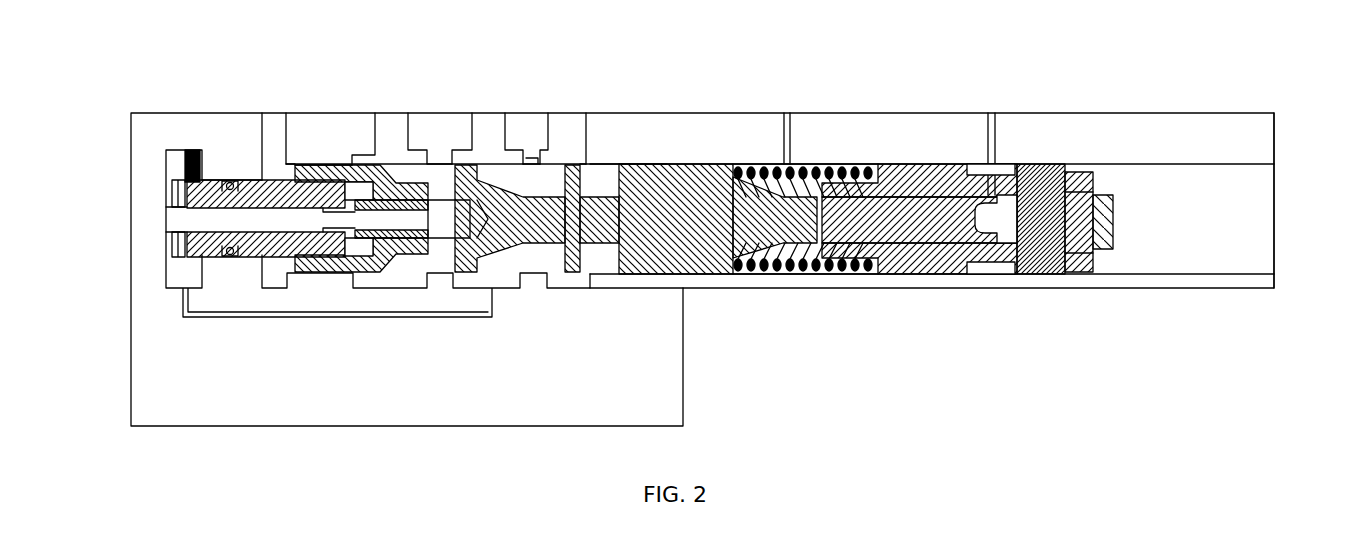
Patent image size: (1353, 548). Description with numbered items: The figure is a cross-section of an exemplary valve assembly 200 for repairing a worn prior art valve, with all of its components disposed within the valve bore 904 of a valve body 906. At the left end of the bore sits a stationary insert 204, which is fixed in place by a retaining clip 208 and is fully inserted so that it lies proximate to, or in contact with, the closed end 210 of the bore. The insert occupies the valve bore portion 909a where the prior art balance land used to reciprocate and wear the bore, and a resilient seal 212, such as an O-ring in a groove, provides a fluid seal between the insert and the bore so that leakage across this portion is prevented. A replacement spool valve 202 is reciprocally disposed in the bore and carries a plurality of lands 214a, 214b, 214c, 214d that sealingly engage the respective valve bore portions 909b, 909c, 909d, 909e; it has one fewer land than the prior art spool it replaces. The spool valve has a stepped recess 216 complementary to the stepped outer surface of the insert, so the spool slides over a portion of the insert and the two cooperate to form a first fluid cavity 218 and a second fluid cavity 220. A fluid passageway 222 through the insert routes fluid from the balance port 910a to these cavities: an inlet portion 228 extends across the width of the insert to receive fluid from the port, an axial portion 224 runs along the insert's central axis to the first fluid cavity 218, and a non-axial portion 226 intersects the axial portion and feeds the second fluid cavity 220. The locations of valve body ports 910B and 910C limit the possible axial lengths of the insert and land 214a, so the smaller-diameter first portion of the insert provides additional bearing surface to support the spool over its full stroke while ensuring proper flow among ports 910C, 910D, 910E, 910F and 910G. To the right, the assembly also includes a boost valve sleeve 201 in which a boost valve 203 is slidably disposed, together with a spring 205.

The valve assembly 200 is at (1222, 56).
The boost valve sleeve 201 is at (1048, 272).
The replacement spool valve 202 is at (654, 284).
The boost valve 203 is at (884, 225).
The stationary insert 204 is at (180, 202).
The spring 205 is at (780, 270).
The retaining clip 208 is at (192, 150).
The closed end 210 is at (170, 238).
The resilient seal 212 is at (230, 256).
The land 214a is at (365, 258).
The land 214b is at (447, 242).
The land 214c is at (578, 163).
The land 214d is at (687, 177).
The recess 216 is at (356, 190).
The first fluid cavity 218 is at (450, 228).
The second fluid cavity 220 is at (353, 246).
The fluid passageway 222 is at (172, 216).
The axial portion 224 is at (250, 220).
The non-axial portion 226 is at (331, 234).
The inlet portion 228 is at (180, 260).
The valve bore 904 is at (1264, 236).
The valve body 906 is at (1066, 122).
The valve bore portion 909a is at (258, 178).
The valve bore portion 909b is at (354, 163).
The valve bore portion 909c is at (429, 162).
The valve bore portion 909d is at (534, 153).
The valve bore portion 909e is at (666, 162).
The balance port 910a is at (218, 318).
The valve body port 910B is at (278, 112).
The valve body port 910C is at (387, 112).
The valve body port 910D is at (485, 112).
The valve body port 910E is at (565, 112).
The valve body port 910F is at (788, 112).
The valve body port 910G is at (990, 112).